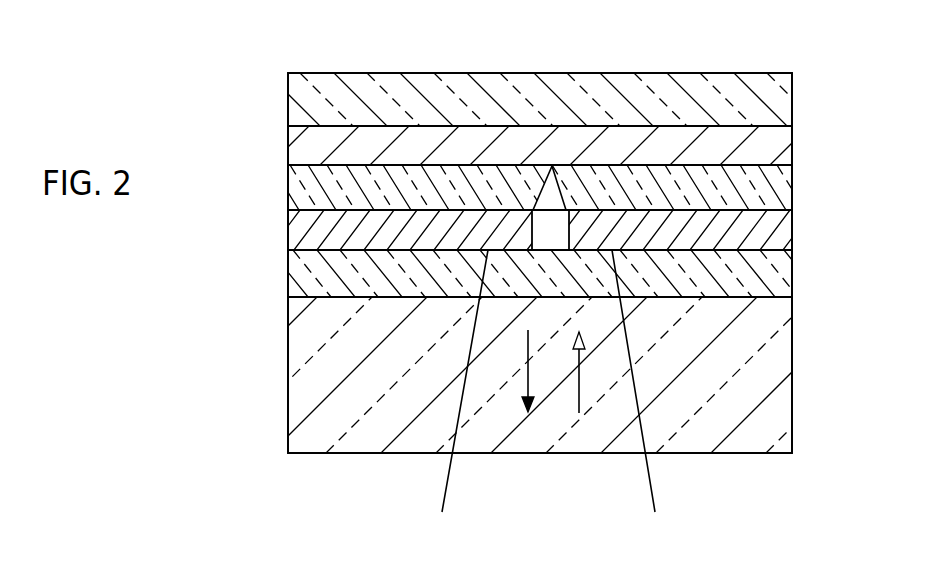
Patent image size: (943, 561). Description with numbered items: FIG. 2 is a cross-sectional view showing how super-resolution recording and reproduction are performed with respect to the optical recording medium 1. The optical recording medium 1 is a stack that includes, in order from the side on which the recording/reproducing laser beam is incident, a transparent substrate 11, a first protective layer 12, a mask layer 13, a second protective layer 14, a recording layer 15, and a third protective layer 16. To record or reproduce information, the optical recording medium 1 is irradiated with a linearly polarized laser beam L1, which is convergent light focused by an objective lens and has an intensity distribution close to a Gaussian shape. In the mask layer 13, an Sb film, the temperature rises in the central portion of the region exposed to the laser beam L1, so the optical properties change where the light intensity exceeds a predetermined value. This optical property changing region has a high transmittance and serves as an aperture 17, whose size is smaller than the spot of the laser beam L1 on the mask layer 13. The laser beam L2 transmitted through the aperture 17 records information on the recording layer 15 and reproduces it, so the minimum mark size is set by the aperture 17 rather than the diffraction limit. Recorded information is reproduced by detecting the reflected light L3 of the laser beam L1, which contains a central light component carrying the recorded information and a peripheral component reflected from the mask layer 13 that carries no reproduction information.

The optical recording medium 1 is at (885, 402).
The transparent substrate 11 is at (782, 370).
The first protective layer 12 is at (783, 273).
The mask layer 13 is at (783, 232).
The second protective layer 14 is at (783, 189).
The recording layer 15 is at (783, 143).
The third protective layer 16 is at (783, 102).
The aperture 17 is at (540, 230).
The laser beam L1 is at (579, 372).
The laser beam transmitted through the aperture L2 is at (560, 178).
The reflected light L3 is at (527, 372).